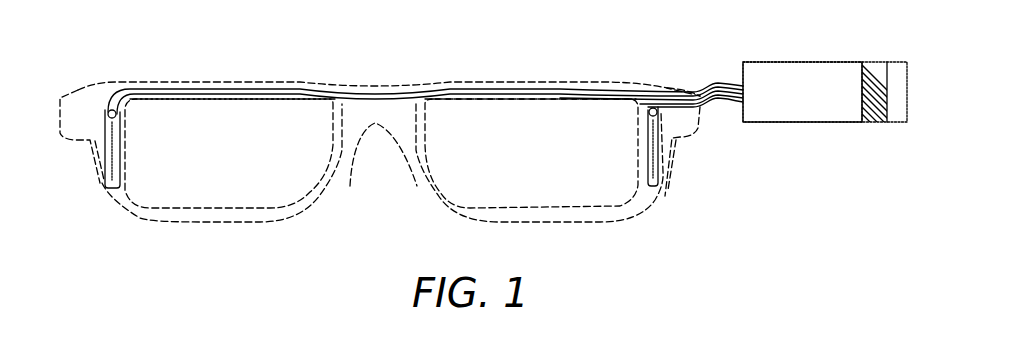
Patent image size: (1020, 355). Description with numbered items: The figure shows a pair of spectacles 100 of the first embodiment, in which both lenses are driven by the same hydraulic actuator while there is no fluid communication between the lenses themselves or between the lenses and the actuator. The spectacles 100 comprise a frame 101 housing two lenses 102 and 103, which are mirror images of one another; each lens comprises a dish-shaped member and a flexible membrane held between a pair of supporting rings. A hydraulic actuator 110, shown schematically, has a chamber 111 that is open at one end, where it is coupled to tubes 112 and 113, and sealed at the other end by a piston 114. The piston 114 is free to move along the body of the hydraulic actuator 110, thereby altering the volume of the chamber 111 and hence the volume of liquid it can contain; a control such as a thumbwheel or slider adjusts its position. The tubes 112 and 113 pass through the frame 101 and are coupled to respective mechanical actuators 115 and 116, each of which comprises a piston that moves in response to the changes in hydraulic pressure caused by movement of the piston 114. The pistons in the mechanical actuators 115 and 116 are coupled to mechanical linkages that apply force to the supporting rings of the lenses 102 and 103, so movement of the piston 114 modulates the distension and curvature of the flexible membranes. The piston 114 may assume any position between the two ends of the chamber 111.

The pair of spectacles 100 is at (109, 236).
The frame 101 is at (82, 105).
The lens 102 is at (228, 187).
The lens 103 is at (533, 188).
The hydraulic actuator 110 is at (800, 62).
The chamber 111 is at (797, 123).
The tube 112 is at (382, 95).
The tube 113 is at (713, 106).
The piston 114 is at (870, 123).
The mechanical actuator 115 is at (102, 185).
The mechanical actuator 116 is at (660, 182).